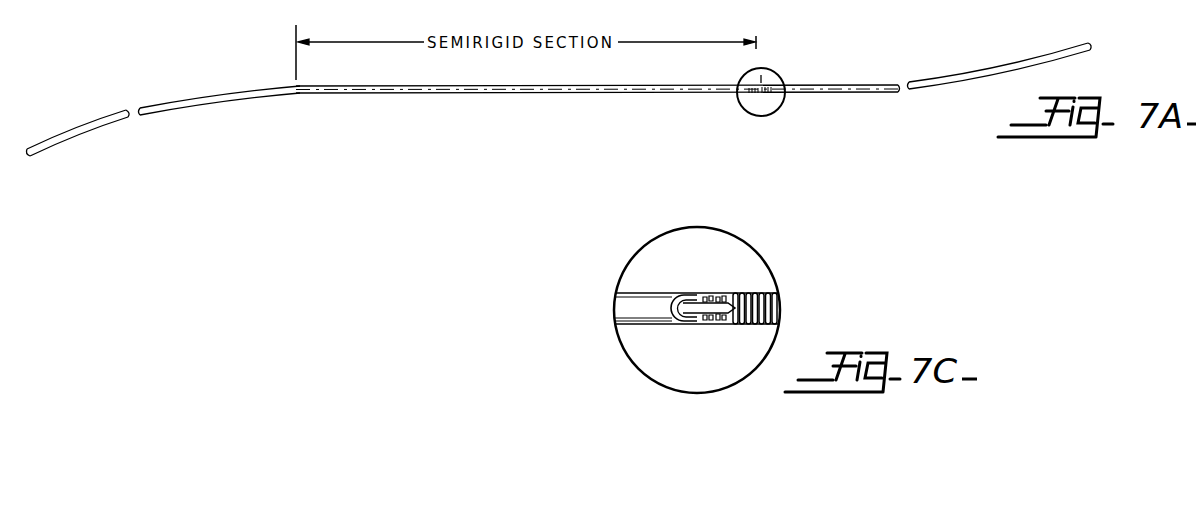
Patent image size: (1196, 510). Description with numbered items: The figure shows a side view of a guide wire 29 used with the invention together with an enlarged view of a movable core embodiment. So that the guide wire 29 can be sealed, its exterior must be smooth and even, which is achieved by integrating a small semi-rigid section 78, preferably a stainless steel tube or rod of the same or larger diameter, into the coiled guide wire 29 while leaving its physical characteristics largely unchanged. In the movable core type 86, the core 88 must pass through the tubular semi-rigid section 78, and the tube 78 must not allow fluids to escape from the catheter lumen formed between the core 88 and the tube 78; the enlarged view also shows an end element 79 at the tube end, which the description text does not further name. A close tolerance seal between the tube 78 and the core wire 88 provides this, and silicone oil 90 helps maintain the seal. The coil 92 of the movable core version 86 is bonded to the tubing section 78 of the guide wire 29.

In FIG. 7A, the guide wire 29 is at (558, 99).
In FIG. 7A, the semi-rigid section 78 is at (407, 95).
In FIG. 7C, the semi-rigid section 78 is at (628, 300).
In FIG. 7C, the cap 79 is at (684, 296).
In FIG. 7C, the movable core type 86 is at (745, 259).
In FIG. 7C, the core 88 is at (701, 311).
In FIG. 7C, the silicone oil 90 is at (732, 296).
In FIG. 7C, the coil 92 is at (776, 297).